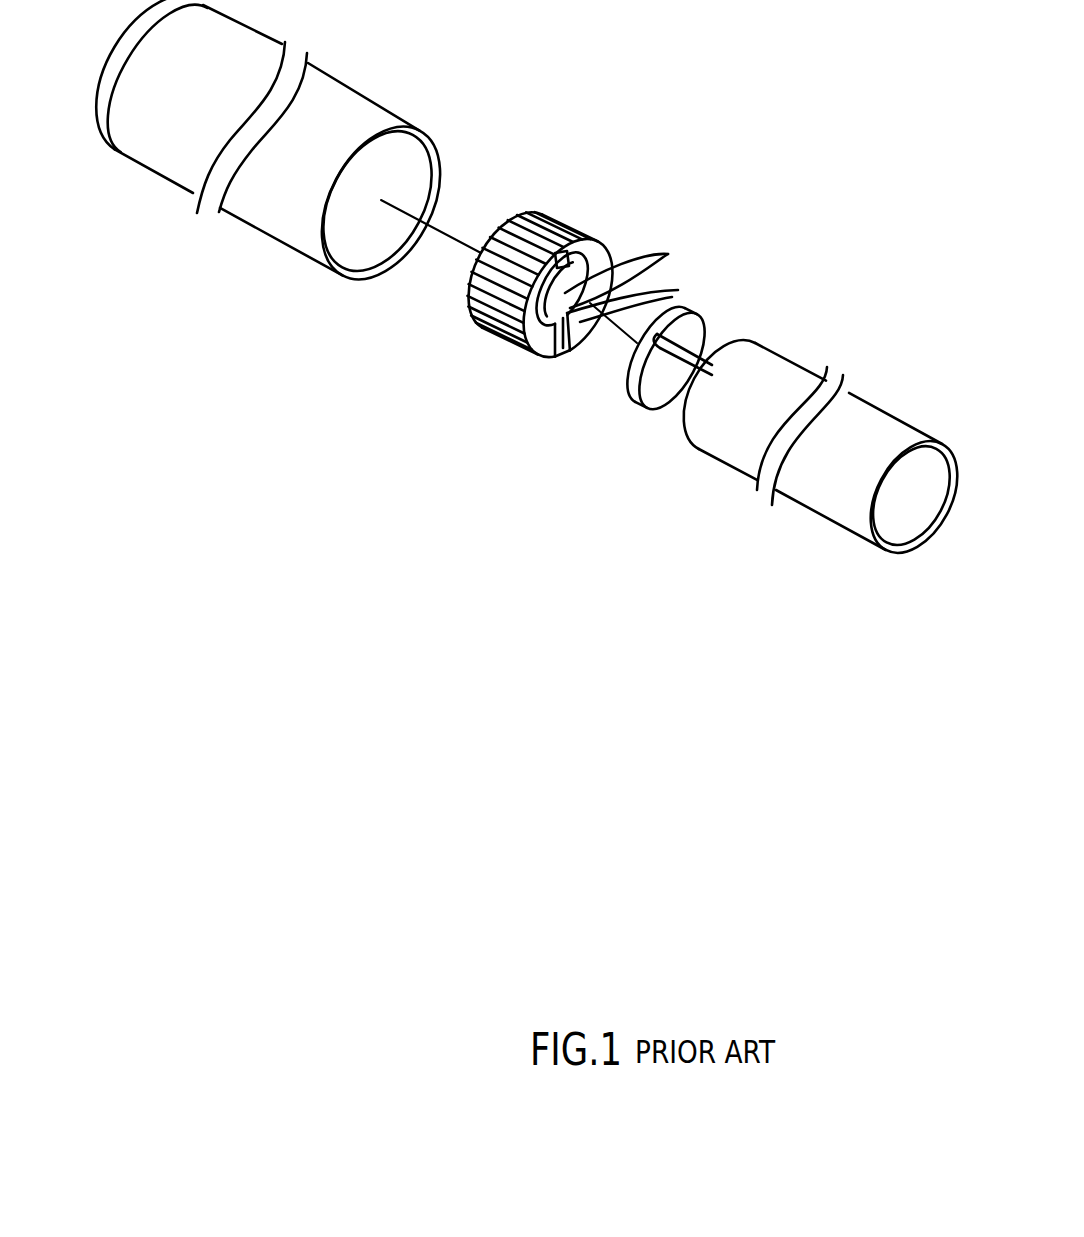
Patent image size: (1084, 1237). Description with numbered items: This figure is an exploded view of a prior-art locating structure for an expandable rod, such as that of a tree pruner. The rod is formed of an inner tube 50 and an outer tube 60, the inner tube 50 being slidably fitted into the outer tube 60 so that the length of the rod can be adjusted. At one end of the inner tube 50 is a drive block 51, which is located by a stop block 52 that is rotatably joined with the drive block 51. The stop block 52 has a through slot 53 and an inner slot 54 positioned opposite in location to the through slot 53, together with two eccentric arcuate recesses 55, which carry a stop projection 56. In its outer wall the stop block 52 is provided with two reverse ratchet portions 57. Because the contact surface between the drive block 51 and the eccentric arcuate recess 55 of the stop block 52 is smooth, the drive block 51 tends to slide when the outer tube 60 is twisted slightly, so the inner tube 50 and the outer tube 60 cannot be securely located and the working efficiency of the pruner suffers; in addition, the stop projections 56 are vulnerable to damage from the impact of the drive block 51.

The inner tube 50 is at (782, 377).
The drive block 51 is at (677, 350).
The stop block 52 is at (583, 284).
The through slot 53 is at (565, 355).
The inner slot 54 is at (569, 254).
The eccentric arcuate recesses 55 is at (641, 297).
The stop projection 56 is at (635, 270).
The reverse ratchet portions 57 is at (490, 338).
The outer tube 60 is at (343, 117).